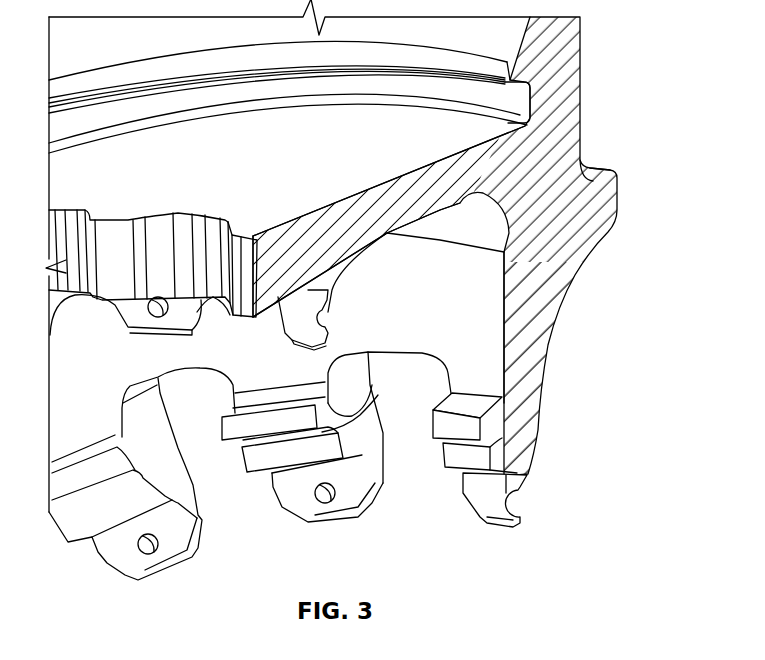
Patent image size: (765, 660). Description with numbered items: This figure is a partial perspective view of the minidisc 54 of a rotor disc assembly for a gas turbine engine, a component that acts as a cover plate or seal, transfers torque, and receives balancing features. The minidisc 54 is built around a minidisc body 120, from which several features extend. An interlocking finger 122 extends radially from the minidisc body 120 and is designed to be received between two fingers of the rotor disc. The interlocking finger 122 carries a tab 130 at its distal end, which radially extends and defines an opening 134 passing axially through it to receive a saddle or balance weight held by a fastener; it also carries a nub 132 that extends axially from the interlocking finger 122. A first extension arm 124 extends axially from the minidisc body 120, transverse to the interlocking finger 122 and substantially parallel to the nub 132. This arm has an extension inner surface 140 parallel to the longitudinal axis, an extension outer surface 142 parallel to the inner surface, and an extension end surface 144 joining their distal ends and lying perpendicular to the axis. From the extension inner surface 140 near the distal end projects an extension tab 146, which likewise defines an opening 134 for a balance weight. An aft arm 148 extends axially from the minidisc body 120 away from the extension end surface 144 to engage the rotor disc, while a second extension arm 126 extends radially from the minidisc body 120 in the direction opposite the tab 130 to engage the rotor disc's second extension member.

The minidisc 54 is at (616, 260).
The minidisc body 120 is at (533, 313).
The interlocking finger 122 is at (368, 448).
The first extension arm 124 is at (427, 190).
The second extension arm 126 is at (575, 57).
The tab 130 is at (350, 495).
The nub 132 is at (372, 384).
The opening 134 is at (150, 328).
The extension inner surface 140 is at (357, 253).
The extension outer surface 142 is at (310, 213).
The extension end surface 144 is at (243, 243).
The extension tab 146 is at (183, 317).
The aft arm 148 is at (600, 203).